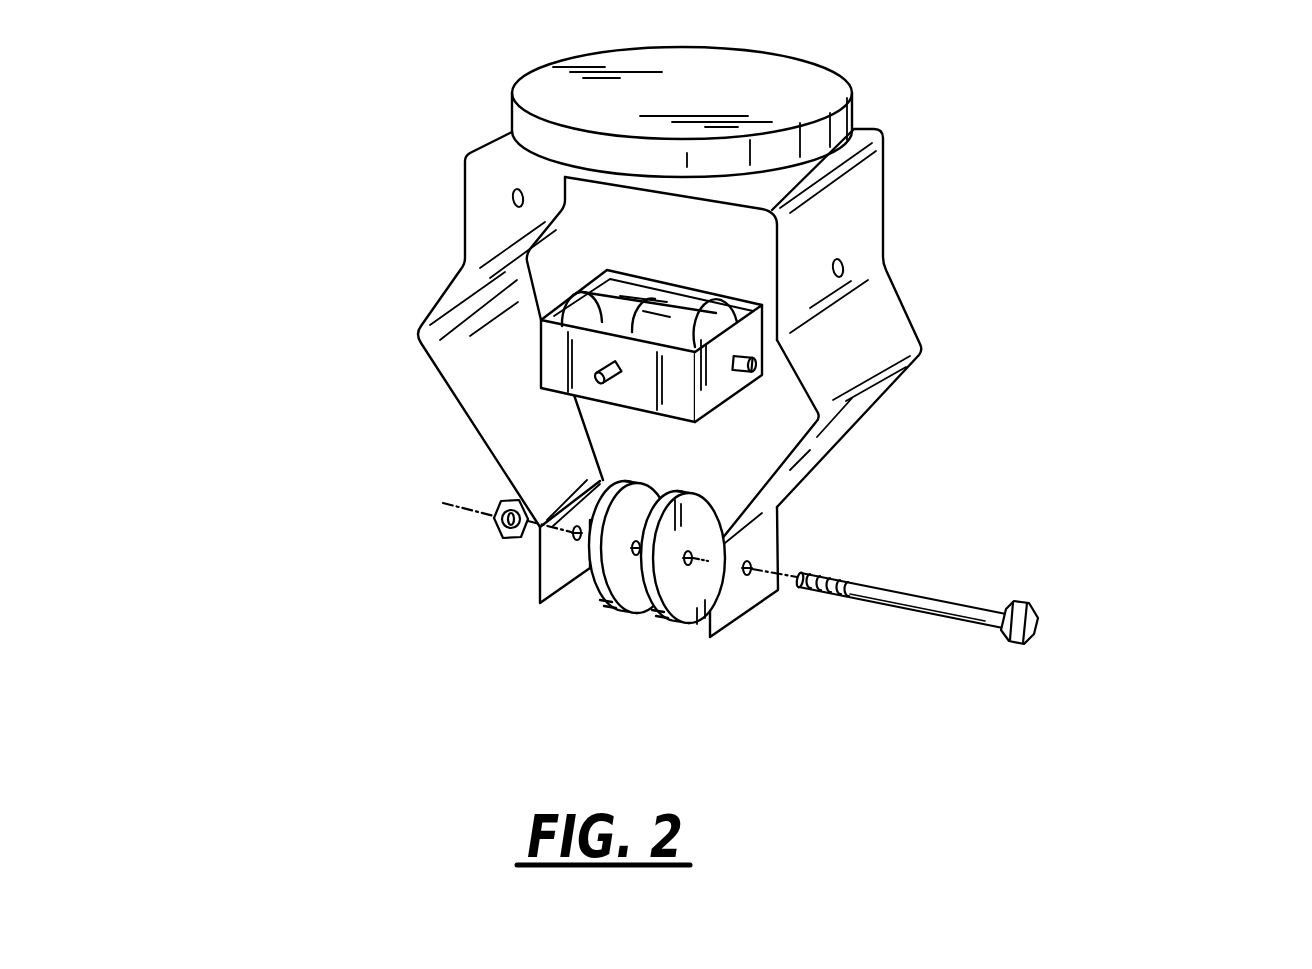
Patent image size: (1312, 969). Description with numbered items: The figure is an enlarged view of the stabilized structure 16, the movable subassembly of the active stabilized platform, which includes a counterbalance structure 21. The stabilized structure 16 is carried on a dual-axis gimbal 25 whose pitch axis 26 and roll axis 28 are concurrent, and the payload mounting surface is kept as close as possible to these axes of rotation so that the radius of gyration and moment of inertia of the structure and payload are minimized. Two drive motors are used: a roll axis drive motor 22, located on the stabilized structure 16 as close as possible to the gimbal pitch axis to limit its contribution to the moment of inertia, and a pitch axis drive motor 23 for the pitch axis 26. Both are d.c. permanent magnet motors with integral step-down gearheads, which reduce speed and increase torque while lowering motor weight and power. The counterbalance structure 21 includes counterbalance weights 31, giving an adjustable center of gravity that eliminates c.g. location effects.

The stabilized structure 16 is at (880, 100).
The counterbalance structure 21 is at (928, 354).
The roll axis drive motor 22 is at (709, 303).
The pitch axis drive motor 23 is at (594, 311).
The dual-axis gimbal 25 is at (530, 365).
The pitch axis 26 is at (743, 373).
The roll axis 28 is at (612, 378).
The counterbalance weights 31 is at (624, 626).